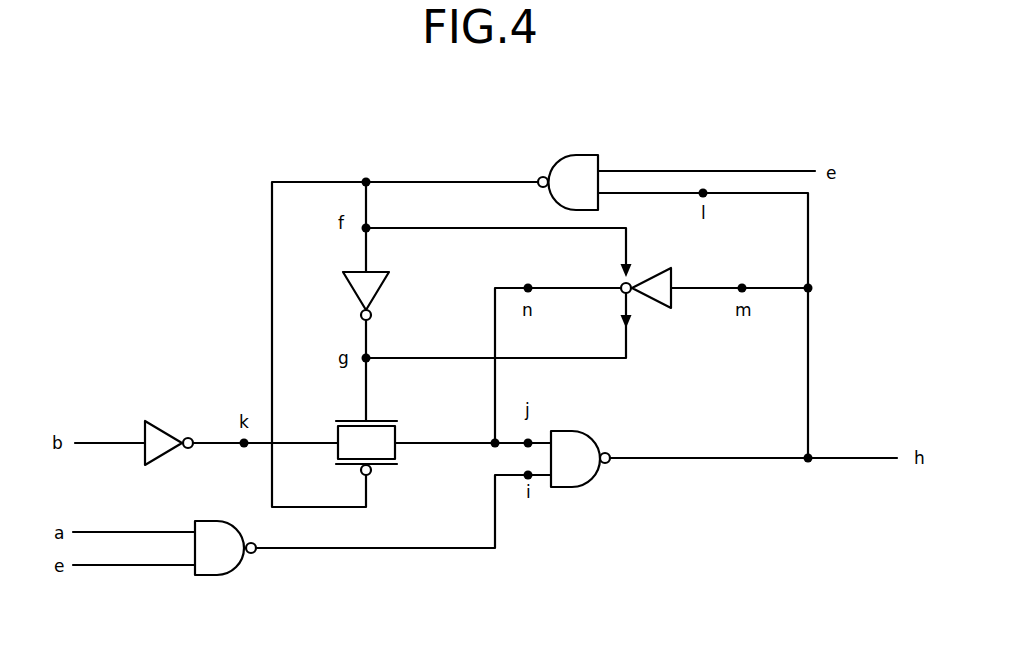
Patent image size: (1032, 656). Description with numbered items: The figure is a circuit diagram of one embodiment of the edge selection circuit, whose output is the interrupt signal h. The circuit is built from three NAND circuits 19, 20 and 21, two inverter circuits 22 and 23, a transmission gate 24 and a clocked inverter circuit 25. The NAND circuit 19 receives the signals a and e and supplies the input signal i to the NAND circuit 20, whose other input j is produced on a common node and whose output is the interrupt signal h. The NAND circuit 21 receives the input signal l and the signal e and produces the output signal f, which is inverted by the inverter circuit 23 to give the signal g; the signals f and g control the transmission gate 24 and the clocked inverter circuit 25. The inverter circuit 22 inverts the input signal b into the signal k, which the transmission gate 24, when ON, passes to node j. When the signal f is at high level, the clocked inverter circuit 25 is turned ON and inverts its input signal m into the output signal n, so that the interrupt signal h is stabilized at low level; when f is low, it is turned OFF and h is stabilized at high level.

The NAND circuit 19 is at (222, 576).
The NAND circuit 20 is at (575, 431).
The NAND circuit 21 is at (557, 162).
The inverter circuit 22 is at (160, 426).
The inverter circuit 23 is at (377, 290).
The transmission gate 24 is at (395, 433).
The clocked inverter circuit 25 is at (666, 302).